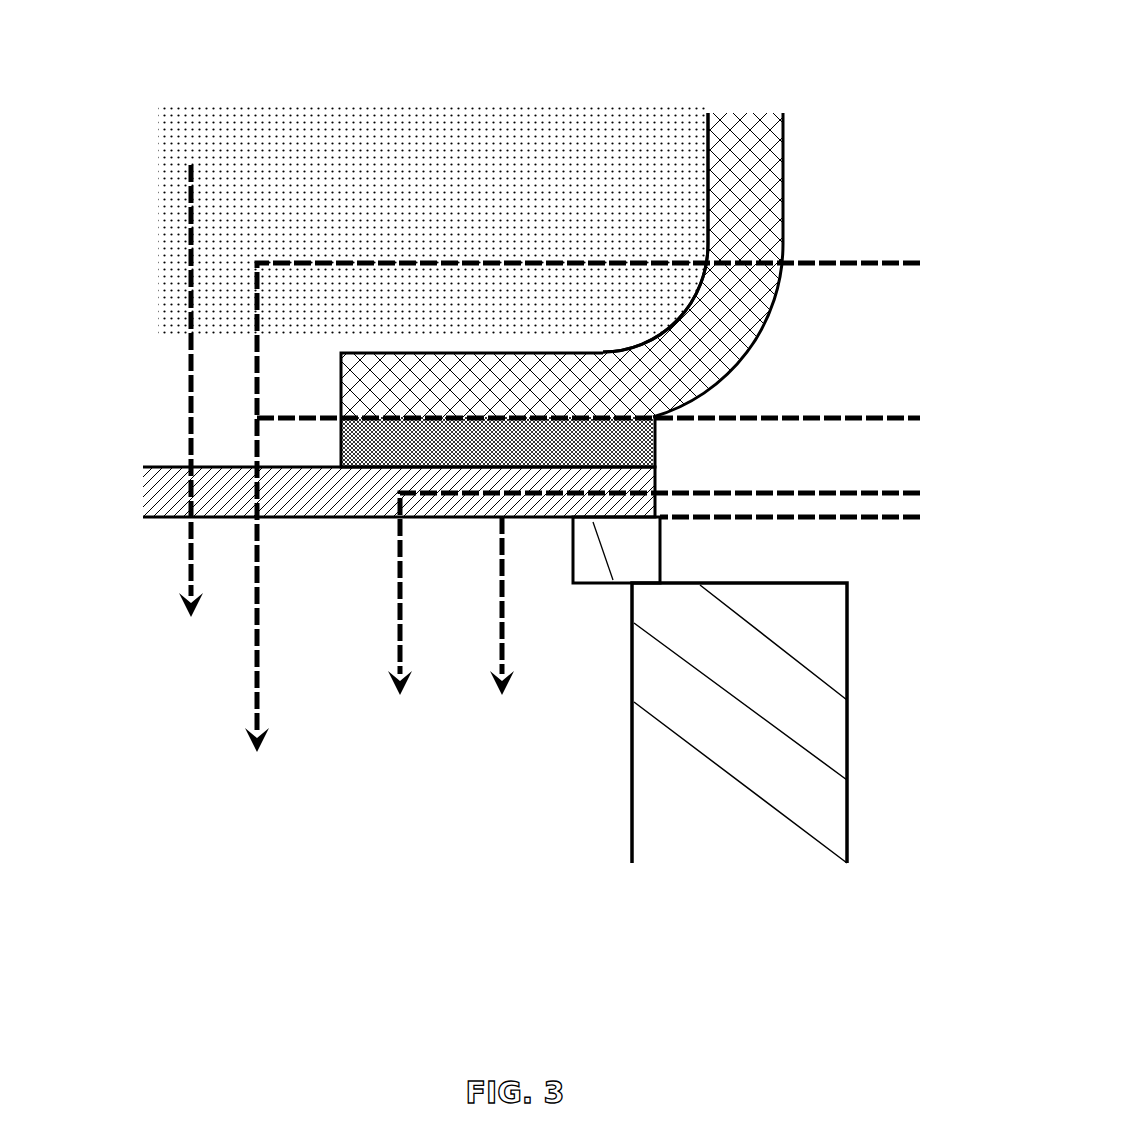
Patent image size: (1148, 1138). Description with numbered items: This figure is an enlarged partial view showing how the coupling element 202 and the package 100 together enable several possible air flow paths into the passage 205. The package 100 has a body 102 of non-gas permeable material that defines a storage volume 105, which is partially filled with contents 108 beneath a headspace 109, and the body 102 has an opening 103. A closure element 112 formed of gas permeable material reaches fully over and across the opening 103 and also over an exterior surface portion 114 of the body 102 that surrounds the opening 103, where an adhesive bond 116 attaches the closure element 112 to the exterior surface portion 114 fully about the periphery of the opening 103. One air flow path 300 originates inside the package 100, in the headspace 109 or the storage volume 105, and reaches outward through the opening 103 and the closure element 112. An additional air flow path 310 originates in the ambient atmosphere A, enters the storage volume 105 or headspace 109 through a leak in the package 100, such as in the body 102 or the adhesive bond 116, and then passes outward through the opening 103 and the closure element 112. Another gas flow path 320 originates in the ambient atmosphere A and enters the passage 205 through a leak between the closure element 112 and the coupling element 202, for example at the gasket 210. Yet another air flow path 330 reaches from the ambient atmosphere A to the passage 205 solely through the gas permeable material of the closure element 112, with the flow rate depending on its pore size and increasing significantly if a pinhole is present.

The package 100 is at (804, 89).
The body 102 is at (768, 320).
The opening 103 is at (153, 362).
The storage volume 105 is at (340, 185).
The contents 108 is at (593, 170).
The headspace 109 is at (114, 453).
The closure element 112 is at (147, 492).
The exterior surface portion 114 is at (717, 388).
The adhesive bond 116 is at (658, 440).
The coupling element 202 is at (847, 655).
The passage 205 is at (357, 825).
The gasket 210 is at (662, 546).
The air flow path 300 is at (193, 411).
The additional air flow path 310 is at (576, 530).
The gas flow path 320 is at (699, 627).
The air flow path 330 is at (646, 615).
The ambient atmosphere A is at (850, 218).